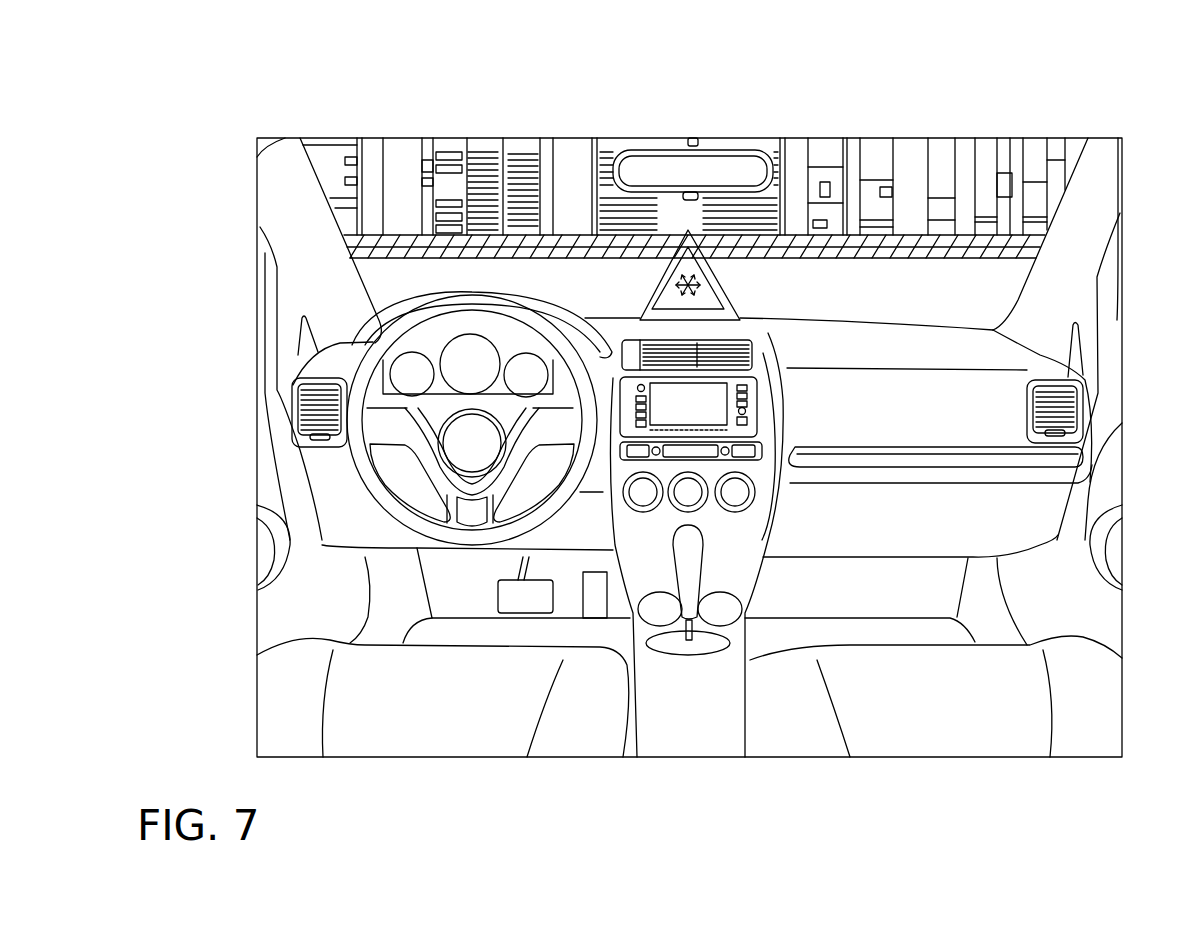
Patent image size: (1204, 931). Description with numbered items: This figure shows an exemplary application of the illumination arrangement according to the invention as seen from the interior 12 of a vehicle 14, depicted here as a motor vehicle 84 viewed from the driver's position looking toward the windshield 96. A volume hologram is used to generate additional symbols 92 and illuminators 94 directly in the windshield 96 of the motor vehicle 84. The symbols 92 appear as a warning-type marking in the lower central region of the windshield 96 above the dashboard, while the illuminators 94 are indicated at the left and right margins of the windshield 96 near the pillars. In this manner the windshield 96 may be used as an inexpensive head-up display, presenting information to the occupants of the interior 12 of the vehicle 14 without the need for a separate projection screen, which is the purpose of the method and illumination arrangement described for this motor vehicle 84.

The interior 12 is at (950, 437).
The vehicle 14 is at (684, 131).
The motor vehicle 84 is at (868, 110).
The symbols 92 is at (679, 258).
The illuminators 94 is at (282, 208).
The windshield 96 is at (775, 233).